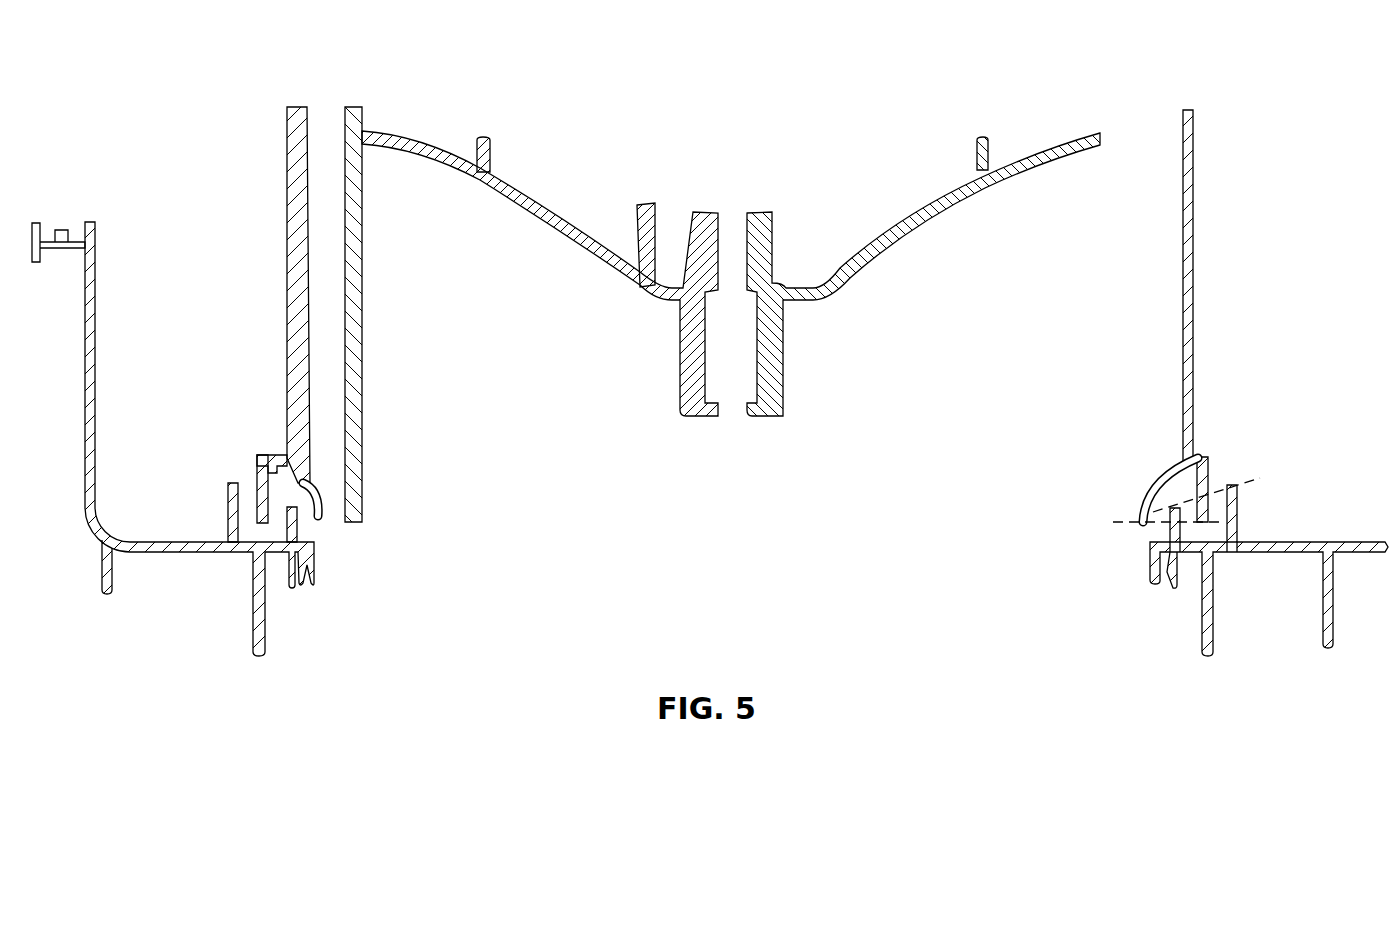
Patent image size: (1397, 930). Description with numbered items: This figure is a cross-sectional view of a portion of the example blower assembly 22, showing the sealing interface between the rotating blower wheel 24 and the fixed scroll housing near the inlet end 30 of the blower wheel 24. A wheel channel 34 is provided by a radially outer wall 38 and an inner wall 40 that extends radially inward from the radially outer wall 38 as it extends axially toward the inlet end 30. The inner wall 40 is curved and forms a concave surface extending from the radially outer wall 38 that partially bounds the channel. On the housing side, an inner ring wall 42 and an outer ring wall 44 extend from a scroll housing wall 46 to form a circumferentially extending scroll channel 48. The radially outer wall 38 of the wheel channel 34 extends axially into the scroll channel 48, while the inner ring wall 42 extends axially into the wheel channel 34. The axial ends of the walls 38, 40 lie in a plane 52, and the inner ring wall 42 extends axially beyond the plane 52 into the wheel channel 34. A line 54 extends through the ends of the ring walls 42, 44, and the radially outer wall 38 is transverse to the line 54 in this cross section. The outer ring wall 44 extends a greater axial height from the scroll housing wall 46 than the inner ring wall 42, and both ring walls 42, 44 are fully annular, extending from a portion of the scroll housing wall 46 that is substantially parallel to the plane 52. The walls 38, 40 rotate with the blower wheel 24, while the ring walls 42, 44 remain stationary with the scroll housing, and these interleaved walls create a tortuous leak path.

The blower assembly 22 is at (138, 55).
The blower wheel 24 is at (287, 242).
The inlet end 30 is at (790, 452).
The wheel channel 34 is at (306, 455).
The radially outer wall 38 is at (258, 490).
The inner wall 40 is at (322, 513).
The inner ring wall 42 is at (338, 478).
The outer ring wall 44 is at (232, 497).
The scroll housing wall 46 is at (158, 550).
The scroll channel 48 is at (240, 488).
The plane 52 is at (1115, 520).
The line 54 is at (1257, 479).